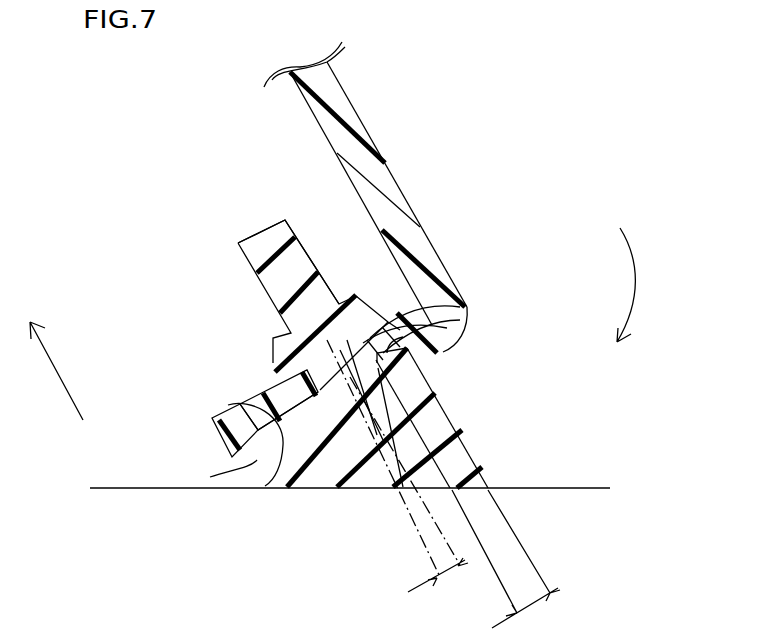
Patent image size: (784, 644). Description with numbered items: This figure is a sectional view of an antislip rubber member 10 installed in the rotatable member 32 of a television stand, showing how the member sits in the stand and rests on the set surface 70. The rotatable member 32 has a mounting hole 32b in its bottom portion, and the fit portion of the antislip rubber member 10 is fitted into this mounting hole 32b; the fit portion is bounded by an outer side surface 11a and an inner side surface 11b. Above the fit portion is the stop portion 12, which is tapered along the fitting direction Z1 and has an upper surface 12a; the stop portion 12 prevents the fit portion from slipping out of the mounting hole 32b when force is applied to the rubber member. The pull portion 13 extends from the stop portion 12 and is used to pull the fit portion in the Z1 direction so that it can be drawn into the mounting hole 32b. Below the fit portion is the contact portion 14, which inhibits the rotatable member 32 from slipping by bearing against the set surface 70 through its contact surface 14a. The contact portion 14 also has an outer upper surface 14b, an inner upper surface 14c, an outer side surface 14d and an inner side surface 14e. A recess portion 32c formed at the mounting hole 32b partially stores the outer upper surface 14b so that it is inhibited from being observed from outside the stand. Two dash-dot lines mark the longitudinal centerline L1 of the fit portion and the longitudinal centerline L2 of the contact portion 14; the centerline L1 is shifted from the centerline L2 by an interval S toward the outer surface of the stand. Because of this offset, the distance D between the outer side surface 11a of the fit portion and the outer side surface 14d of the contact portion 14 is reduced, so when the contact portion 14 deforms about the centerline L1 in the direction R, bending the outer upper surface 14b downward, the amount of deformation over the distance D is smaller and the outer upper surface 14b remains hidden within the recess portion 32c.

The antislip rubber member 10 is at (245, 228).
The outer side surface 11a is at (435, 305).
The inner side surface 11b is at (293, 393).
The stop portion 12 is at (300, 355).
The upper surface 12a is at (342, 295).
The pull portion 13 is at (270, 228).
The contact portion 14 is at (283, 455).
The contact surface 14a is at (330, 490).
The outer upper surface 14b is at (412, 330).
The inner upper surface 14c is at (227, 408).
The outer side surface 14d is at (447, 407).
The inner side surface 14e is at (275, 450).
The rotatable member 32 is at (412, 203).
The mounting hole 32b is at (288, 357).
The recess portion 32c is at (283, 437).
The set surface 70 is at (572, 488).
The fitting direction Z1 is at (59, 371).
The bending direction R is at (640, 285).
The longitudinal centerline of the fit portion L1 is at (418, 502).
The longitudinal centerline of the contact portion L2 is at (405, 518).
The interval S is at (435, 575).
The distance D is at (506, 559).